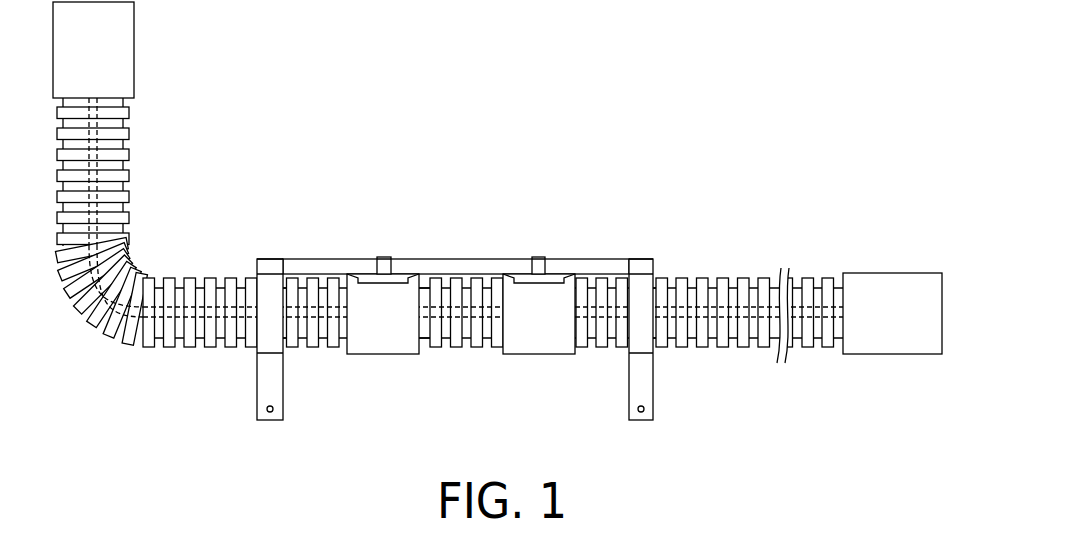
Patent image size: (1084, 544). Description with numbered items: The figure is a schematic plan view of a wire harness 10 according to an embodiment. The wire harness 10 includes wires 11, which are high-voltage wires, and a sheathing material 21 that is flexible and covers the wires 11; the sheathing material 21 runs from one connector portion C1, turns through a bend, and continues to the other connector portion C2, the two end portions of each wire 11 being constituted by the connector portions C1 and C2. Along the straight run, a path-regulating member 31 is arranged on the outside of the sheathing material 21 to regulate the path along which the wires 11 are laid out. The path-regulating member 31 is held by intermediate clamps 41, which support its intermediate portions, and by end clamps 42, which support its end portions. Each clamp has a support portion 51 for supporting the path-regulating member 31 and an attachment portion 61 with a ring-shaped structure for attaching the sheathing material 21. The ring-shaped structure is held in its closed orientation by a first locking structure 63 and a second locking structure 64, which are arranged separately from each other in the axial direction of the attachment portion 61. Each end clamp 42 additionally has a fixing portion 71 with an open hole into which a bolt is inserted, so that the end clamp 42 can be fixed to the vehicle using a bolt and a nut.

The wire harness 10 is at (497, 217).
The wires 11 is at (100, 114).
The sheathing material 21 is at (129, 155).
The path-regulating member 31 is at (461, 258).
The intermediate clamps 41 is at (389, 258).
The end clamps 42 is at (275, 258).
The support portion 51 is at (639, 257).
The attachment portion 61 is at (482, 340).
The first locking structure 63 is at (515, 275).
The second locking structure 64 is at (567, 275).
The fixing portion 71 is at (682, 414).
The connector portion C1 is at (135, 48).
The connector portion C2 is at (895, 272).